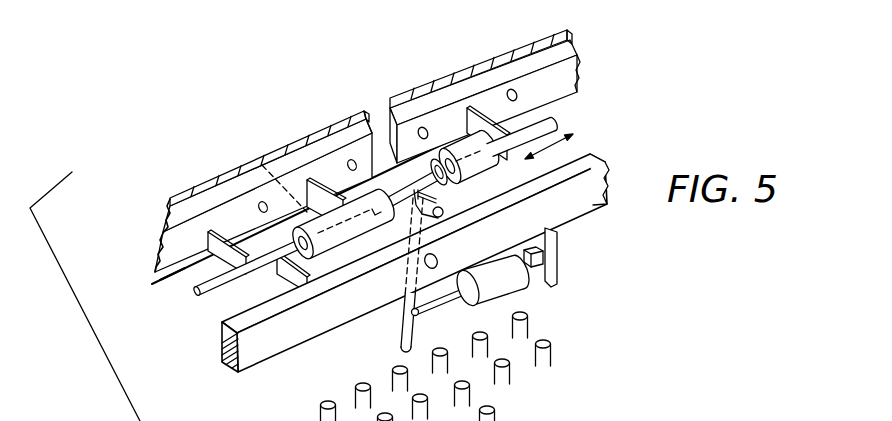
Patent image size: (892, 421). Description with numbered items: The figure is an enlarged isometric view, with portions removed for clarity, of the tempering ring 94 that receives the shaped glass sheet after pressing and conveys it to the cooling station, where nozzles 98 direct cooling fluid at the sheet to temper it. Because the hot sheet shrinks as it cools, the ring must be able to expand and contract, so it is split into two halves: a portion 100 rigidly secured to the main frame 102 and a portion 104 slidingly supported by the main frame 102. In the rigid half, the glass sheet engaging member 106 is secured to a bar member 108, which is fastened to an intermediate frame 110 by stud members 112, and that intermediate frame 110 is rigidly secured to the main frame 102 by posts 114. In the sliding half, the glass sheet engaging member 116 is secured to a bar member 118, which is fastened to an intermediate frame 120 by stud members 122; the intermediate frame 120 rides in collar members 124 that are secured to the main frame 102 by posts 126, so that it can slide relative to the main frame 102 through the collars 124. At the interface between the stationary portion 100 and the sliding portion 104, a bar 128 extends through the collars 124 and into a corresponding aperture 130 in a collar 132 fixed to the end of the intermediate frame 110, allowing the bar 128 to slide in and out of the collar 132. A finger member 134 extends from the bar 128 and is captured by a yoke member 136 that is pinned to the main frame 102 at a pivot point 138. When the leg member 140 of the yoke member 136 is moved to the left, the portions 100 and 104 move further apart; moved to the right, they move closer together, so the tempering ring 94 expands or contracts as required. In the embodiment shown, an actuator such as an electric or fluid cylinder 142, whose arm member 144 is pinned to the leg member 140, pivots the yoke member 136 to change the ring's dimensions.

The tempering ring 94 is at (318, 72).
The nozzles 98 is at (553, 354).
The portion 100 is at (150, 283).
The main frame 102 is at (221, 350).
The portion 104 is at (578, 42).
The glass sheet engaging member 106 is at (200, 193).
The bar member 108 is at (158, 250).
The intermediate frame 110 is at (197, 294).
The stud members 112 is at (173, 282).
The posts 114 is at (278, 283).
The glass sheet engaging member 116 is at (553, 36).
The bar member 118 is at (580, 64).
The intermediate frame 120 is at (558, 122).
The stud members 122 is at (557, 106).
The collar members 124 is at (457, 147).
The posts 126 is at (457, 202).
The bar 128 is at (380, 130).
The aperture 130 is at (262, 163).
The collar 132 is at (372, 243).
The finger member 134 is at (446, 211).
The yoke member 136 is at (433, 184).
The pivot point 138 is at (438, 256).
The leg member 140 is at (402, 338).
The cylinder 142 is at (523, 290).
The arm member 144 is at (423, 313).